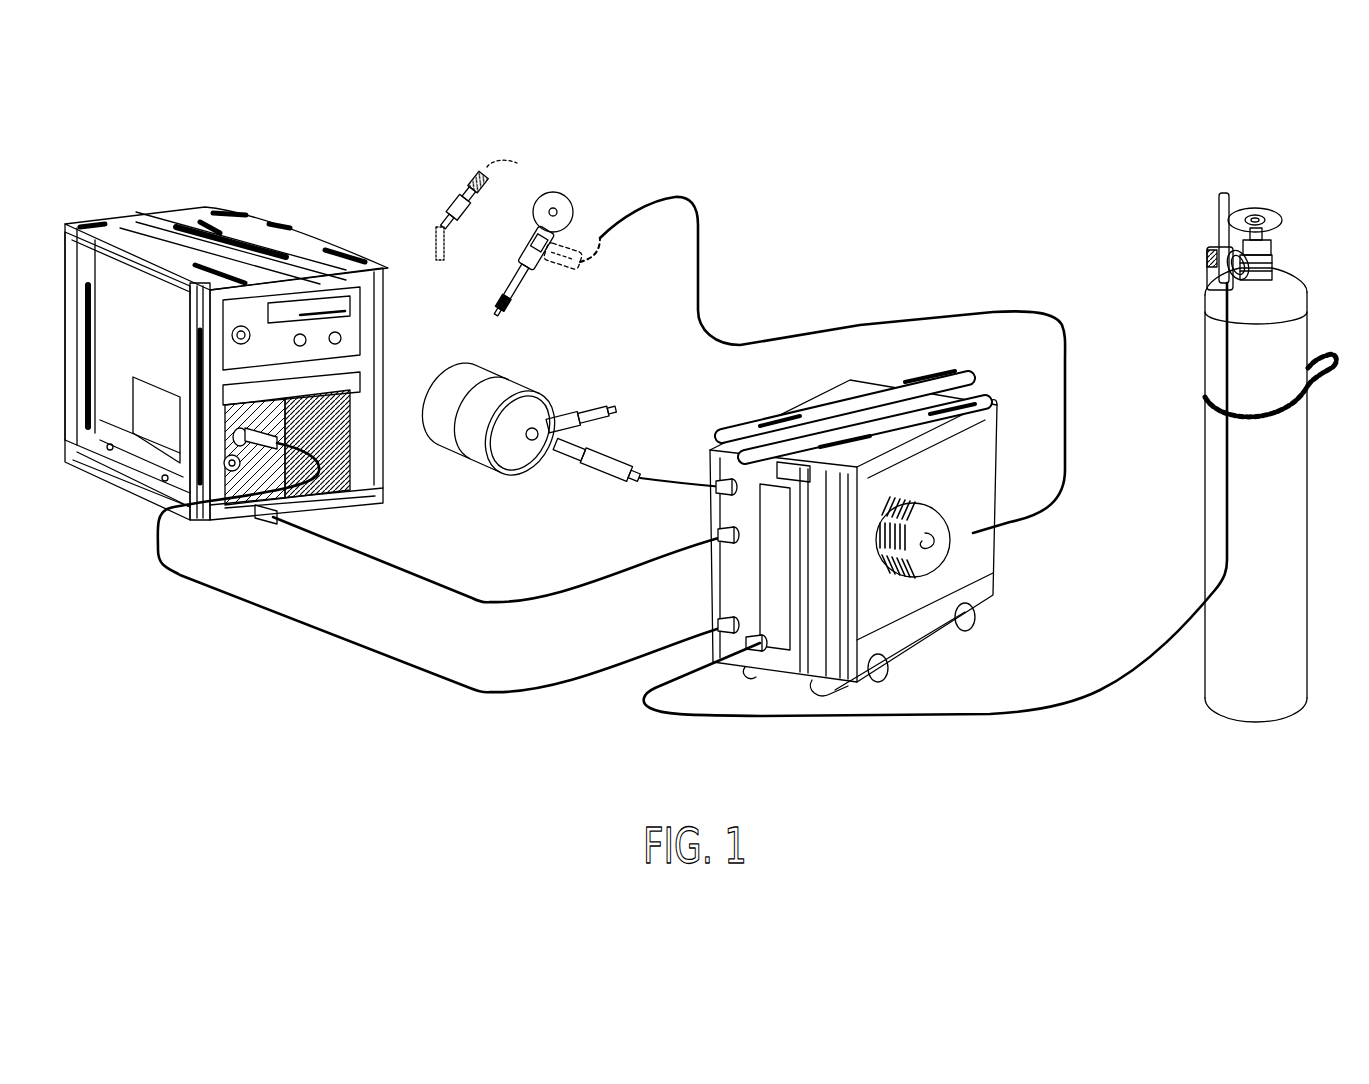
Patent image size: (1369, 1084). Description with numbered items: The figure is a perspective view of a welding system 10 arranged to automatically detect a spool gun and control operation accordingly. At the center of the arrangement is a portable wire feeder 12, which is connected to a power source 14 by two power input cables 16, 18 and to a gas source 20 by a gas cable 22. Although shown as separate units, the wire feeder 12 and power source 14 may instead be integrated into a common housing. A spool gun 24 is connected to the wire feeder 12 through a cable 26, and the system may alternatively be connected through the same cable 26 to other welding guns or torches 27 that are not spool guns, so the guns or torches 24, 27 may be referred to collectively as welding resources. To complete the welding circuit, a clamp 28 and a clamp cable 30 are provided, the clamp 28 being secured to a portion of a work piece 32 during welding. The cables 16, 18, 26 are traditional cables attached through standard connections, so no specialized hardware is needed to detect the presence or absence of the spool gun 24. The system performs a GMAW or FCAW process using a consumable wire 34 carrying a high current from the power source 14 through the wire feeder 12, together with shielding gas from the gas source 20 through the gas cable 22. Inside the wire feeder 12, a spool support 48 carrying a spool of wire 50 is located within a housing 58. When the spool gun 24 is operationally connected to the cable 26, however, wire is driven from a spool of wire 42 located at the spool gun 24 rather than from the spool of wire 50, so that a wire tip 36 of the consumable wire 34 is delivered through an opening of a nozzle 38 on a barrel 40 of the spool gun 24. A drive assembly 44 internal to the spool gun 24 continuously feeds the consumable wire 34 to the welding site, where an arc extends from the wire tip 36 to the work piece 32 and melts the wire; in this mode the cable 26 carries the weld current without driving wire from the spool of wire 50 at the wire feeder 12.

The welding system 10 is at (998, 220).
The wire feeder 12 is at (993, 603).
The power source 14 is at (263, 227).
The power input cable 16 is at (443, 590).
The power input cable 18 is at (345, 643).
The gas source 20 is at (1308, 330).
The gas cable 22 is at (987, 717).
The spool gun 24 is at (628, 180).
The cable 26 is at (773, 340).
The welding gun or torch 27 is at (438, 221).
The clamp 28 is at (617, 417).
The clamp cable 30 is at (640, 488).
The work piece 32 is at (533, 392).
The consumable wire 34 is at (507, 317).
The wire tip 36 is at (503, 321).
The nozzle 38 is at (502, 308).
The barrel 40 is at (513, 273).
The spool of wire 42 is at (547, 193).
The drive assembly 44 is at (560, 253).
The spool support 48 is at (947, 558).
The spool of wire 50 is at (917, 570).
The housing 58 is at (1012, 427).